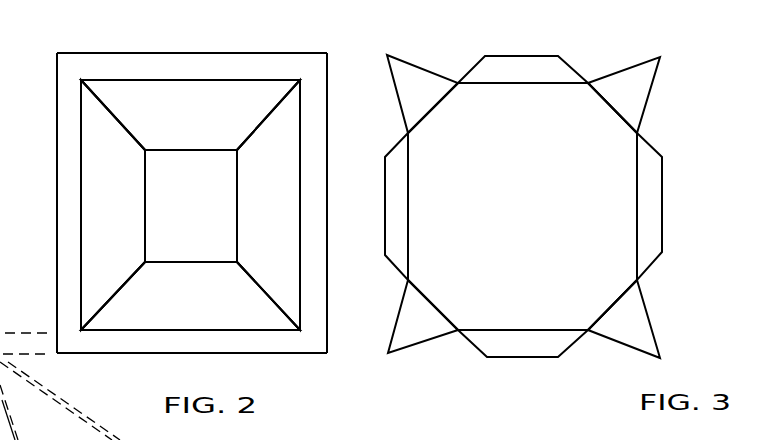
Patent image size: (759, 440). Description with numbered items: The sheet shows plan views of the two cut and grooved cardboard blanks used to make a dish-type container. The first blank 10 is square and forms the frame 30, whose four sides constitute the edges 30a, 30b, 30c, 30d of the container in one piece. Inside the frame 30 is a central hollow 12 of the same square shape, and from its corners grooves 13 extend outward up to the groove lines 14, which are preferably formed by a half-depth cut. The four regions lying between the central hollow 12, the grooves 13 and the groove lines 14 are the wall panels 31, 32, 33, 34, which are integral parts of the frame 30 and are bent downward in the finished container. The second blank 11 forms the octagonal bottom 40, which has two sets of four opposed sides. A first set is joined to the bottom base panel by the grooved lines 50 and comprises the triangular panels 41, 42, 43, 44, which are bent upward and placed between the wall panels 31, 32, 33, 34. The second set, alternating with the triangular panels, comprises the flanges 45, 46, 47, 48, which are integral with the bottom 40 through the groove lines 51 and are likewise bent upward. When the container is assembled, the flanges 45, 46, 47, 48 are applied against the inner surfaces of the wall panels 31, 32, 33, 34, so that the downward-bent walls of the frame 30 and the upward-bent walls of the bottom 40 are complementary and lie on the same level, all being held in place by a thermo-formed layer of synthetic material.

In FIG. 2, the blank 10 is at (187, 200).
In FIG. 3, the second blank 11 is at (516, 204).
In FIG. 2, the central hollow 12 is at (174, 227).
In FIG. 2, the grooves 13 is at (112, 118).
In FIG. 2, the groove lines 14 is at (210, 80).
In FIG. 2, the frame 30 is at (176, 207).
In FIG. 2, the edge 30a is at (53, 238).
In FIG. 2, the edge 30b is at (147, 51).
In FIG. 2, the edge 30c is at (329, 78).
In FIG. 2, the edge 30d is at (110, 355).
In FIG. 2, the wall panel 31 is at (88, 247).
In FIG. 2, the wall panel 32 is at (138, 122).
In FIG. 2, the wall panel 33 is at (251, 172).
In FIG. 2, the wall panel 34 is at (176, 312).
In FIG. 3, the bottom 40 is at (504, 227).
In FIG. 3, the triangular panel 41 is at (404, 105).
In FIG. 3, the triangular panel 42 is at (608, 107).
In FIG. 3, the triangular panel 43 is at (622, 333).
In FIG. 3, the triangular panel 44 is at (414, 333).
In FIG. 3, the flange 45 is at (395, 253).
In FIG. 3, the flange 46 is at (497, 66).
In FIG. 3, the flange 47 is at (656, 180).
In FIG. 3, the flange 48 is at (525, 348).
In FIG. 3, the grooved lines 50 is at (440, 103).
In FIG. 3, the groove lines 51 is at (523, 84).